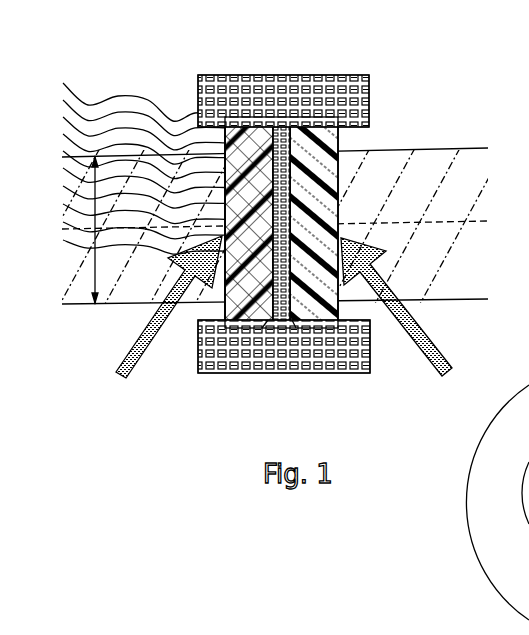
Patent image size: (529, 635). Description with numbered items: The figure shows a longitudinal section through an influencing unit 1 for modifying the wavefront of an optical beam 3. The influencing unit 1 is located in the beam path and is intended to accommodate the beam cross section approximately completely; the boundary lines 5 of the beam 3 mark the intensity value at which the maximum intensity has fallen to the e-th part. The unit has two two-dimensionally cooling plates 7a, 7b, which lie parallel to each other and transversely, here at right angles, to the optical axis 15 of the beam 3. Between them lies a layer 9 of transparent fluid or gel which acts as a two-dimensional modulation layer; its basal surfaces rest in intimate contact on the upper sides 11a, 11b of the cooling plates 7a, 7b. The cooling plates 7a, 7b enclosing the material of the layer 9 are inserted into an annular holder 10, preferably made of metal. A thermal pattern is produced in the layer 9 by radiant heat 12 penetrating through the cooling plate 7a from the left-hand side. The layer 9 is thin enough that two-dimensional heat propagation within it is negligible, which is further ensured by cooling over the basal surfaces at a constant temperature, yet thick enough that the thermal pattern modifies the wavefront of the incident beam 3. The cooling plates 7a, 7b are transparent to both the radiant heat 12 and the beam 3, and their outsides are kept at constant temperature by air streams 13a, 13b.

The influencing unit 1 is at (378, 60).
The optical beam 3 is at (82, 274).
The boundary lines 5 is at (185, 155).
The cooling plate 7a is at (236, 160).
The cooling plate 7b is at (294, 158).
The layer 9 is at (332, 150).
The annular holder 10 is at (367, 91).
The upper side 11a is at (262, 330).
The upper side 11b is at (296, 330).
The radiant heat 12 is at (88, 115).
The air stream 13a is at (137, 352).
The air stream 13b is at (423, 353).
The optical axis 15 is at (390, 222).